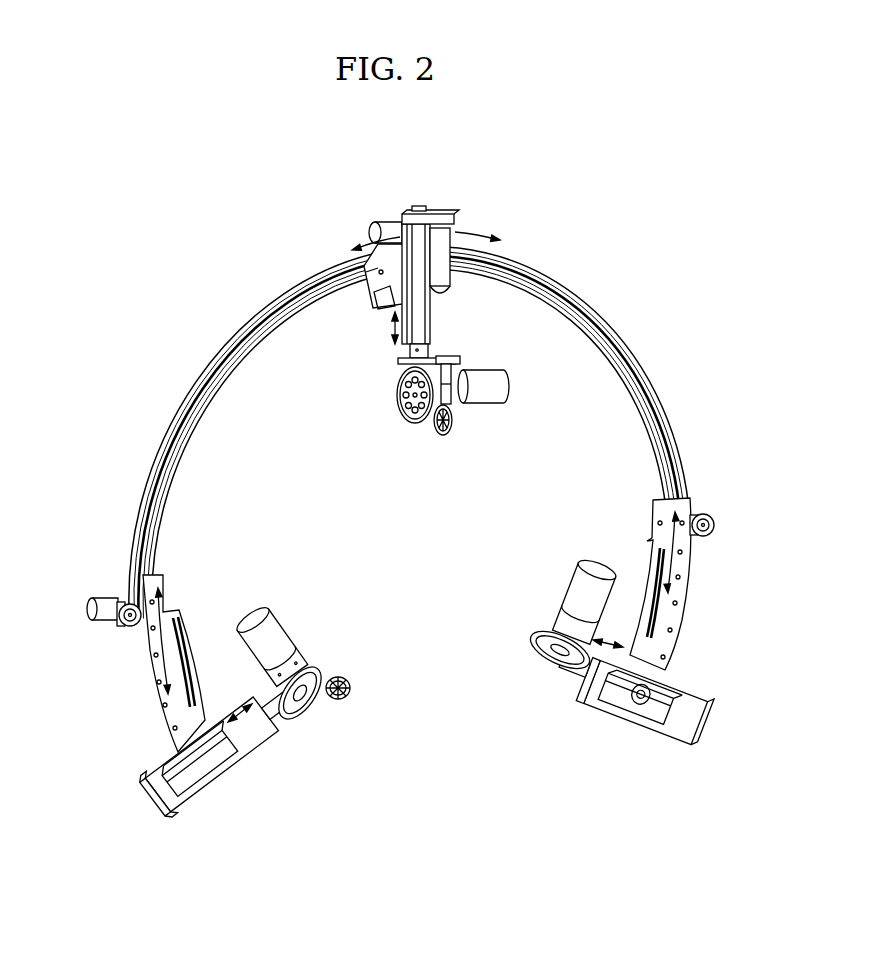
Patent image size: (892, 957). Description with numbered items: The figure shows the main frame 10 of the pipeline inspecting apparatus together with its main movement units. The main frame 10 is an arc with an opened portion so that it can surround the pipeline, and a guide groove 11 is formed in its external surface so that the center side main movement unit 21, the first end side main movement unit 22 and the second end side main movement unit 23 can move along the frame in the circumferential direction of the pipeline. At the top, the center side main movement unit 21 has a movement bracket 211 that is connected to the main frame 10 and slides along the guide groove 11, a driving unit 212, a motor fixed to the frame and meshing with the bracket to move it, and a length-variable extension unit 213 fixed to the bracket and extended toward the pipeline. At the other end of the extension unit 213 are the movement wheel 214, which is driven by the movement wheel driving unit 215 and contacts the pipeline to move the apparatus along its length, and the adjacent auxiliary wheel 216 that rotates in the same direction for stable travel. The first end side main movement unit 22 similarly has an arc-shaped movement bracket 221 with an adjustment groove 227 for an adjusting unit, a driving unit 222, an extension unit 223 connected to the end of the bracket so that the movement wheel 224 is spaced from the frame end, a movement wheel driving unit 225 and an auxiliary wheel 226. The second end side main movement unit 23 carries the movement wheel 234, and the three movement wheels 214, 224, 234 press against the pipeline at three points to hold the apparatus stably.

The main frame 10 is at (409, 433).
The guide groove 11 is at (582, 300).
The center side main movement unit 21 is at (434, 348).
The movement bracket 211 is at (374, 272).
The driving unit 212 is at (371, 230).
The extension unit 213 is at (420, 324).
The movement wheel 214 is at (414, 423).
The movement wheel driving unit 215 is at (500, 392).
The auxiliary wheel 216 is at (451, 432).
The first end side main movement unit 22 is at (238, 707).
The movement bracket 221 is at (190, 646).
The driving unit 222 is at (108, 614).
The extension unit 223 is at (243, 750).
The movement wheel 224 is at (318, 678).
The movement wheel driving unit 225 is at (268, 628).
The auxiliary wheel 226 is at (348, 694).
The adjustment groove 227 is at (178, 648).
The second end side main movement unit 23 is at (600, 650).
The movement wheel 234 is at (540, 632).